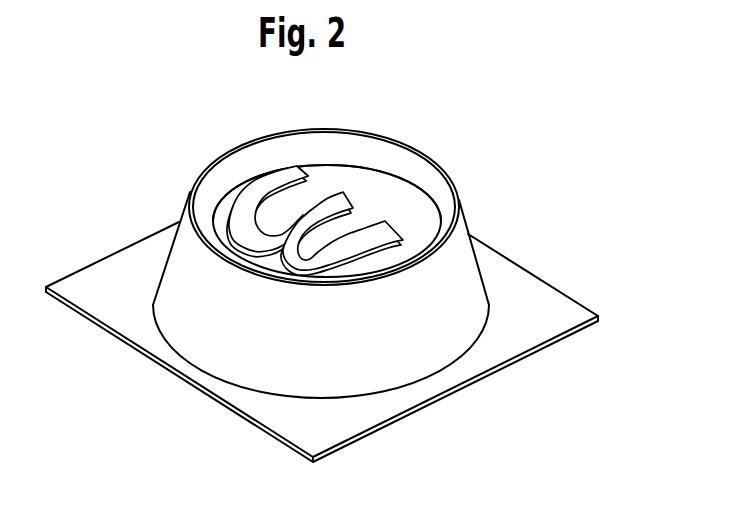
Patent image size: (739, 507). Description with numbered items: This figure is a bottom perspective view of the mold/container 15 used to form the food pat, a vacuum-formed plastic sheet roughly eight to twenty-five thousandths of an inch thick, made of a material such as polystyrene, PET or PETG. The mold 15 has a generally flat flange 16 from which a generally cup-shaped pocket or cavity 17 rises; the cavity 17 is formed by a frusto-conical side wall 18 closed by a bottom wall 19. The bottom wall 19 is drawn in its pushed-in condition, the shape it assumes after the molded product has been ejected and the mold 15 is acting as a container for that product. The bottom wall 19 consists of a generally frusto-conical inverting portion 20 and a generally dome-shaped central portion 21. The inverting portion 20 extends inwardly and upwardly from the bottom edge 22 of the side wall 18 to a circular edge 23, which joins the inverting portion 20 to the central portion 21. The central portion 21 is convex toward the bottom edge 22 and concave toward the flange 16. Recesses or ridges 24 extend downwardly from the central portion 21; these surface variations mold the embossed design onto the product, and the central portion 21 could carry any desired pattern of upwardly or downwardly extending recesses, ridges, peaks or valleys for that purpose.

The mold/container 15 is at (417, 155).
The flange 16 is at (567, 307).
The cup-shaped pocket or cavity 17 is at (185, 260).
The frusto-conical side wall 18 is at (467, 280).
The bottom wall 19 is at (397, 205).
The inverting portion 20 is at (247, 158).
The central portion 21 is at (333, 177).
The bottom edge 22 is at (458, 198).
The circular edge 23 is at (388, 178).
The recesses or ridges 24 is at (343, 255).